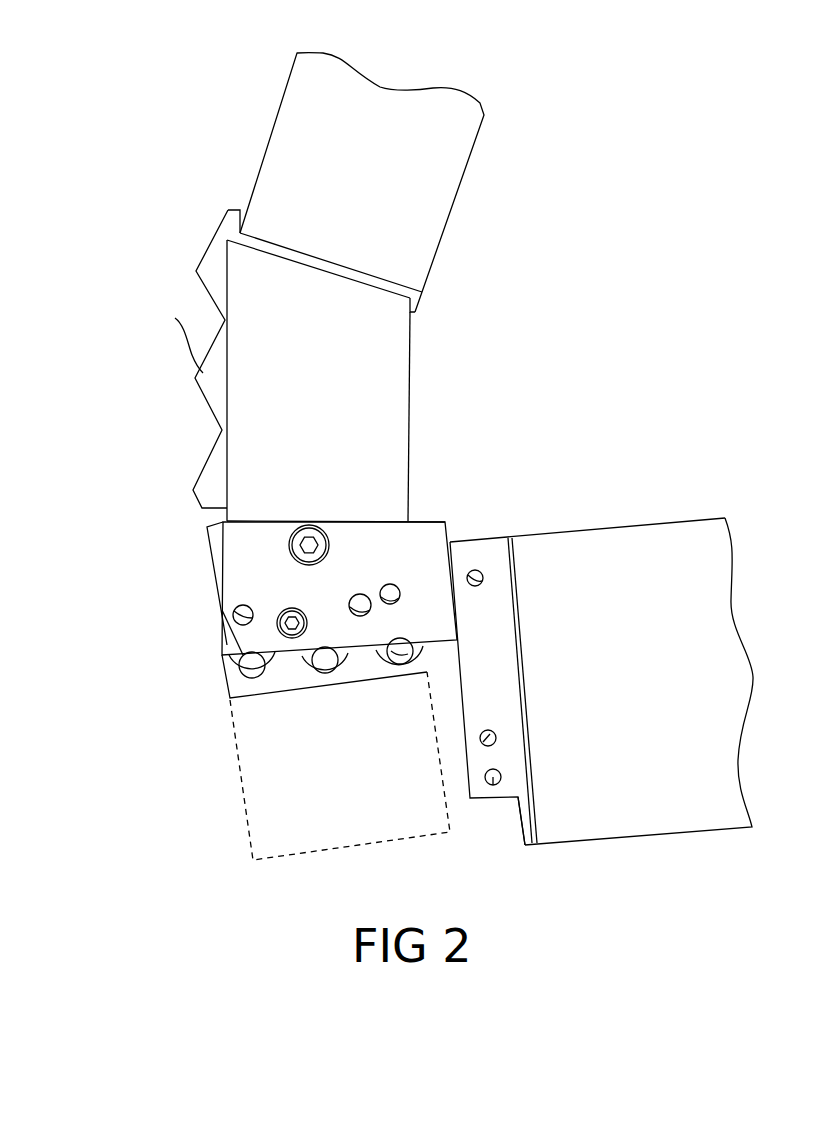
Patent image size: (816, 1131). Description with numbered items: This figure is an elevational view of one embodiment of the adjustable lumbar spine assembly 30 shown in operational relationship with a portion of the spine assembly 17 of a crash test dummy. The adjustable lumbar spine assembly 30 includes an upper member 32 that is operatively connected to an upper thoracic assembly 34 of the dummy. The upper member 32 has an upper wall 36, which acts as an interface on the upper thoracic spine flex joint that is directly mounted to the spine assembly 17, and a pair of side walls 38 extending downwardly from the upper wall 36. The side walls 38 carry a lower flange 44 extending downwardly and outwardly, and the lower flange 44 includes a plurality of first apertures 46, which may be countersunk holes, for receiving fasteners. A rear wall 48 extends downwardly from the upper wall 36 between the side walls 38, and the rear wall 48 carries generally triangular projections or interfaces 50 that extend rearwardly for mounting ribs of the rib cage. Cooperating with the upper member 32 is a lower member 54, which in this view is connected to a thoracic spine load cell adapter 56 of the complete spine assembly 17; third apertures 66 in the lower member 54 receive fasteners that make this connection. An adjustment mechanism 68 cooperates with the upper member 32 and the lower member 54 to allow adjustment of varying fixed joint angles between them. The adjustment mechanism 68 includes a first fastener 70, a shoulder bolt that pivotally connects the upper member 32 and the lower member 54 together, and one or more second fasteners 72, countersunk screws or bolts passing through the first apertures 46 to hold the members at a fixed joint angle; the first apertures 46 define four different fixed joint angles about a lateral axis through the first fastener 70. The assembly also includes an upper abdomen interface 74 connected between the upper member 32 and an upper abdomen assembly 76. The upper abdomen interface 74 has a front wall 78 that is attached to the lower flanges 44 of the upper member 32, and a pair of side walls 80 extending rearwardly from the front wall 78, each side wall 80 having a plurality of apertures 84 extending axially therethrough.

The spine assembly 17 is at (270, 70).
The adjustable lumbar spine assembly 30 is at (110, 188).
The upper member 32 is at (422, 353).
The upper thoracic assembly 34 is at (452, 213).
The upper wall 36 is at (287, 252).
The side walls 38 is at (395, 426).
The lower flange 44 is at (417, 540).
The first apertures 46 is at (234, 618).
The rear wall 48 is at (230, 210).
The interfaces 50 is at (212, 283).
The lower member 54 is at (198, 559).
The thoracic spine load cell adapter 56 is at (243, 808).
The third apertures 66 is at (300, 658).
The adjustment mechanism 68 is at (280, 531).
The first fastener 70 is at (302, 553).
The second fasteners 72 is at (277, 625).
The upper abdomen interface 74 is at (499, 516).
The upper abdomen assembly 76 is at (627, 543).
The front wall 78 is at (537, 820).
The side walls 80 is at (514, 779).
The apertures 84 is at (483, 580).